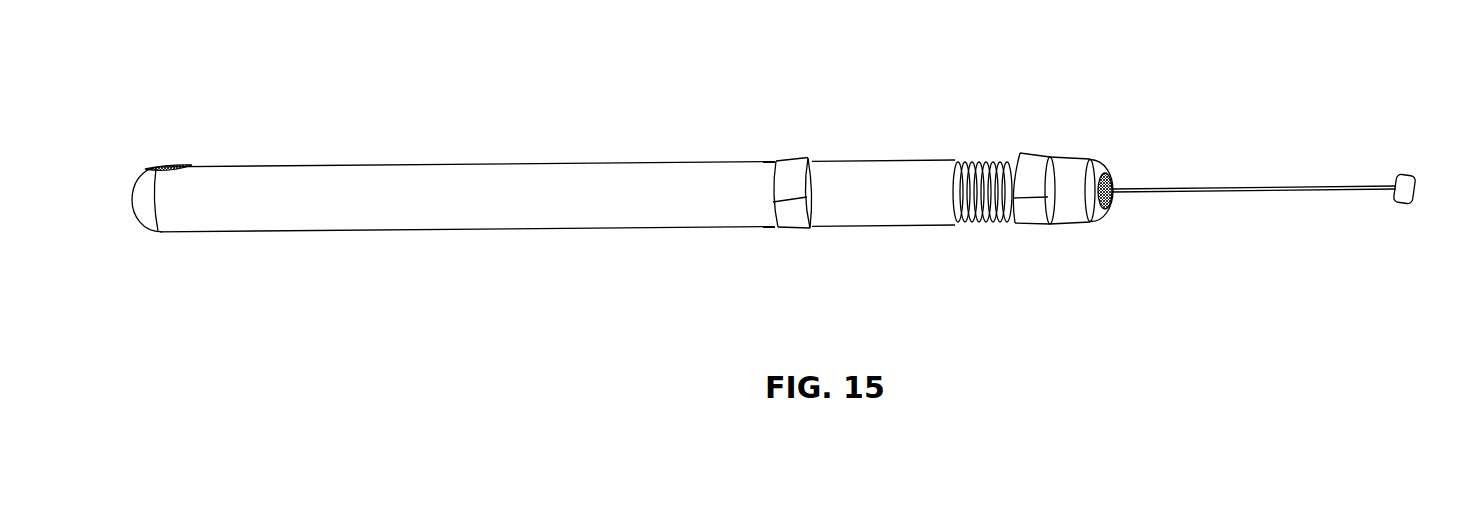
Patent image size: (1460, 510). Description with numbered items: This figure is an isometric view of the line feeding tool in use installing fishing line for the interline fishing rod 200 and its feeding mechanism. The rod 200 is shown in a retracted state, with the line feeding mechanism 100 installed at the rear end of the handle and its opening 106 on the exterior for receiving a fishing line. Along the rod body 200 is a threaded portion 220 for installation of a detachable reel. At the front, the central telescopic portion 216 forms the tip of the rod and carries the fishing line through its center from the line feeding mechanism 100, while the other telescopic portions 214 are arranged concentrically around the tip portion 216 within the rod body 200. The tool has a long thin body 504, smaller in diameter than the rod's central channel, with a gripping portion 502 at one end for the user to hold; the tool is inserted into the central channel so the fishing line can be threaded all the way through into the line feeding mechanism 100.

The line feeding mechanism 100 is at (143, 177).
The opening 106 is at (179, 165).
The interline fishing rod 200 is at (465, 165).
The threaded portion 220 is at (1020, 163).
The telescopic portions 214 is at (1105, 178).
The central telescopic portion 216 is at (1113, 190).
The long thin body 504 is at (1243, 188).
The gripping portion 502 is at (1406, 176).